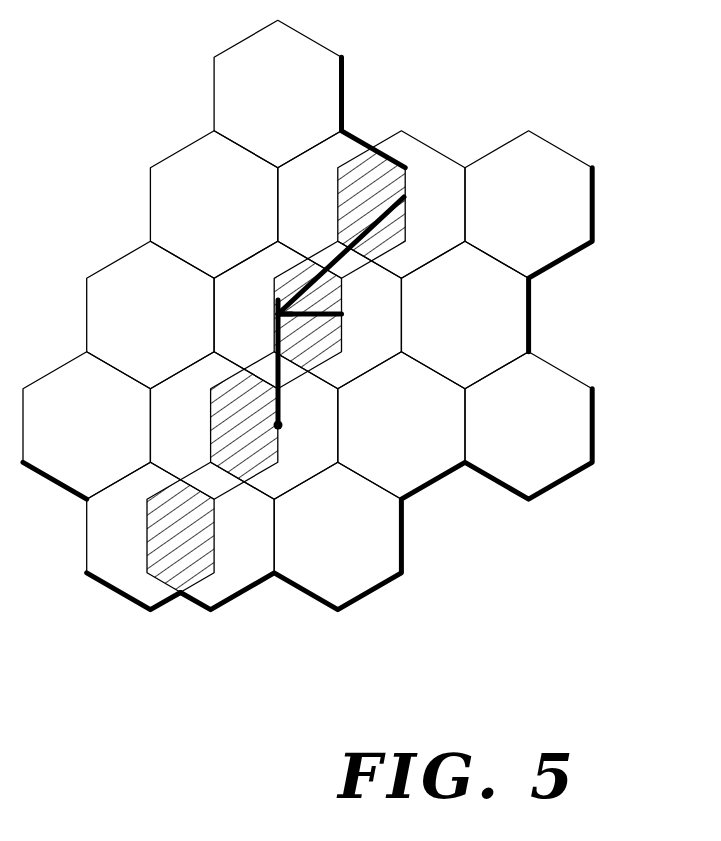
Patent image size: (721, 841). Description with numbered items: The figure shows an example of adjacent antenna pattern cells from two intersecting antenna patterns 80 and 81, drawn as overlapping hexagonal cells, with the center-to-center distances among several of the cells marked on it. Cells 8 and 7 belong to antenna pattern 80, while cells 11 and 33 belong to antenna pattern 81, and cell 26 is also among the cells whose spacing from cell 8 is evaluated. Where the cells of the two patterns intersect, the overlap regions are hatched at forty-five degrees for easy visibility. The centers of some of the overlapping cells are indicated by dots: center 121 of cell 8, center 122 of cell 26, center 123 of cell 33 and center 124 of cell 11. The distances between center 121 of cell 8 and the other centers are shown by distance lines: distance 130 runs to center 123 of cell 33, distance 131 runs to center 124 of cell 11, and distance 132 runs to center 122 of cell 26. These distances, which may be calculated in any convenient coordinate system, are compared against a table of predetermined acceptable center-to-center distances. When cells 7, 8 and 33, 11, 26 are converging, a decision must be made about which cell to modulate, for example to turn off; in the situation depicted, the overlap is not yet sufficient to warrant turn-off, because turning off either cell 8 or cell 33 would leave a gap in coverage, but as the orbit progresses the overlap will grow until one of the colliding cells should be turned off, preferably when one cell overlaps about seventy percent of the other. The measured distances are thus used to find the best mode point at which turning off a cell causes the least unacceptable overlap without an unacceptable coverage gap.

The antenna pattern 80 is at (214, 314).
The antenna pattern 81 is at (405, 370).
The cell 7 is at (341, 204).
The cell 8 is at (277, 314).
The cell 11 is at (401, 204).
The cell 26 is at (274, 425).
The cell 33 is at (337, 314).
The center 121 is at (276, 313).
The center 122 is at (281, 425).
The center 123 is at (341, 315).
The center 124 is at (402, 204).
The distance line 130 is at (310, 308).
The distance line 131 is at (333, 265).
The distance line 132 is at (280, 348).